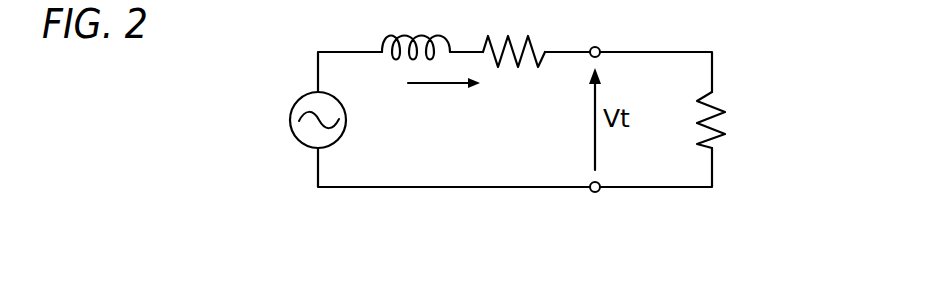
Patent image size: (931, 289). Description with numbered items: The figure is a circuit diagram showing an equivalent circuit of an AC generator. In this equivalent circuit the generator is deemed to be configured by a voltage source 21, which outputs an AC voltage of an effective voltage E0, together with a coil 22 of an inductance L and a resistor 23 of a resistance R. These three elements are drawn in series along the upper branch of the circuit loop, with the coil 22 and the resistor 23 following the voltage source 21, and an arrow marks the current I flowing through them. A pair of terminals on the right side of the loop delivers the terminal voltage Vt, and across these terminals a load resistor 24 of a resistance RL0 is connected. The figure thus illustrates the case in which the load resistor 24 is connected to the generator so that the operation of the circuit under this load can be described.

The voltage source 21 is at (304, 94).
The coil 22 is at (387, 35).
The resistor 23 is at (533, 42).
The load resistor 24 is at (717, 92).